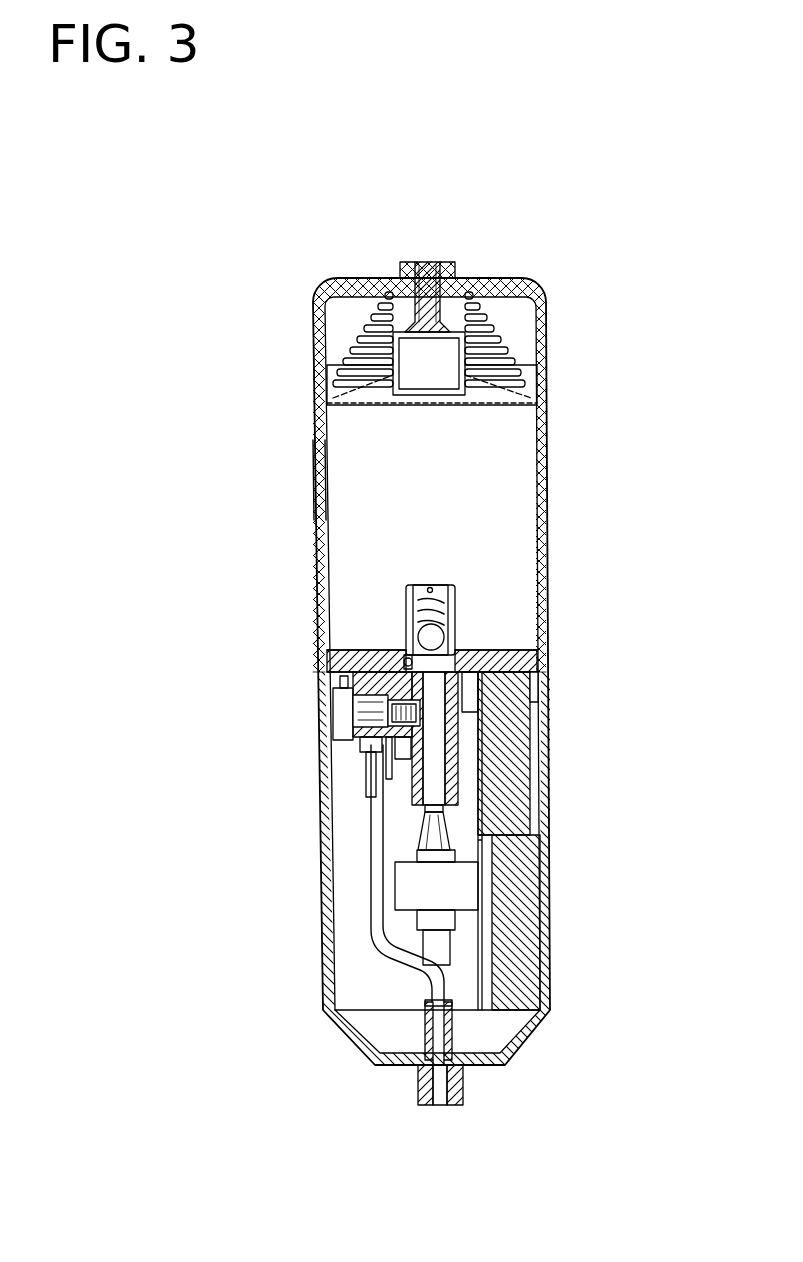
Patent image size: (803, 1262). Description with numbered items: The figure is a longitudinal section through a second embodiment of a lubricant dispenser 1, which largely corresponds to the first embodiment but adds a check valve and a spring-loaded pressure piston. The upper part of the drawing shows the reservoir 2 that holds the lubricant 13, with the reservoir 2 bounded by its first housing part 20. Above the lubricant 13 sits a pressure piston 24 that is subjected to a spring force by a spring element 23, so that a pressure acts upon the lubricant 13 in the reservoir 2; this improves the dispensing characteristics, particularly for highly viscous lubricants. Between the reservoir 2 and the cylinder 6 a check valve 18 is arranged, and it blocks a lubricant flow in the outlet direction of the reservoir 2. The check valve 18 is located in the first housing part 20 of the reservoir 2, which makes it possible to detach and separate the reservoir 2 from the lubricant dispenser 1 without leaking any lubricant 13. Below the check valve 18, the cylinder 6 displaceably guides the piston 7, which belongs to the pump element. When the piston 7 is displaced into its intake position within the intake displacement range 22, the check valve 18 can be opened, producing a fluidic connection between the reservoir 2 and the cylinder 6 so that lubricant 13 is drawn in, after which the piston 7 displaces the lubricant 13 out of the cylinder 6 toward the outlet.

The lubricant dispenser 1 is at (247, 213).
The reservoir 2 is at (541, 452).
The cylinder 6 is at (432, 672).
The piston 7 is at (437, 695).
The lubricant 13 is at (353, 520).
The check valve 18 is at (437, 637).
The first housing part 20 is at (316, 478).
The intake displacement range 22 is at (404, 660).
The spring element 23 is at (492, 324).
The pressure piston 24 is at (499, 393).